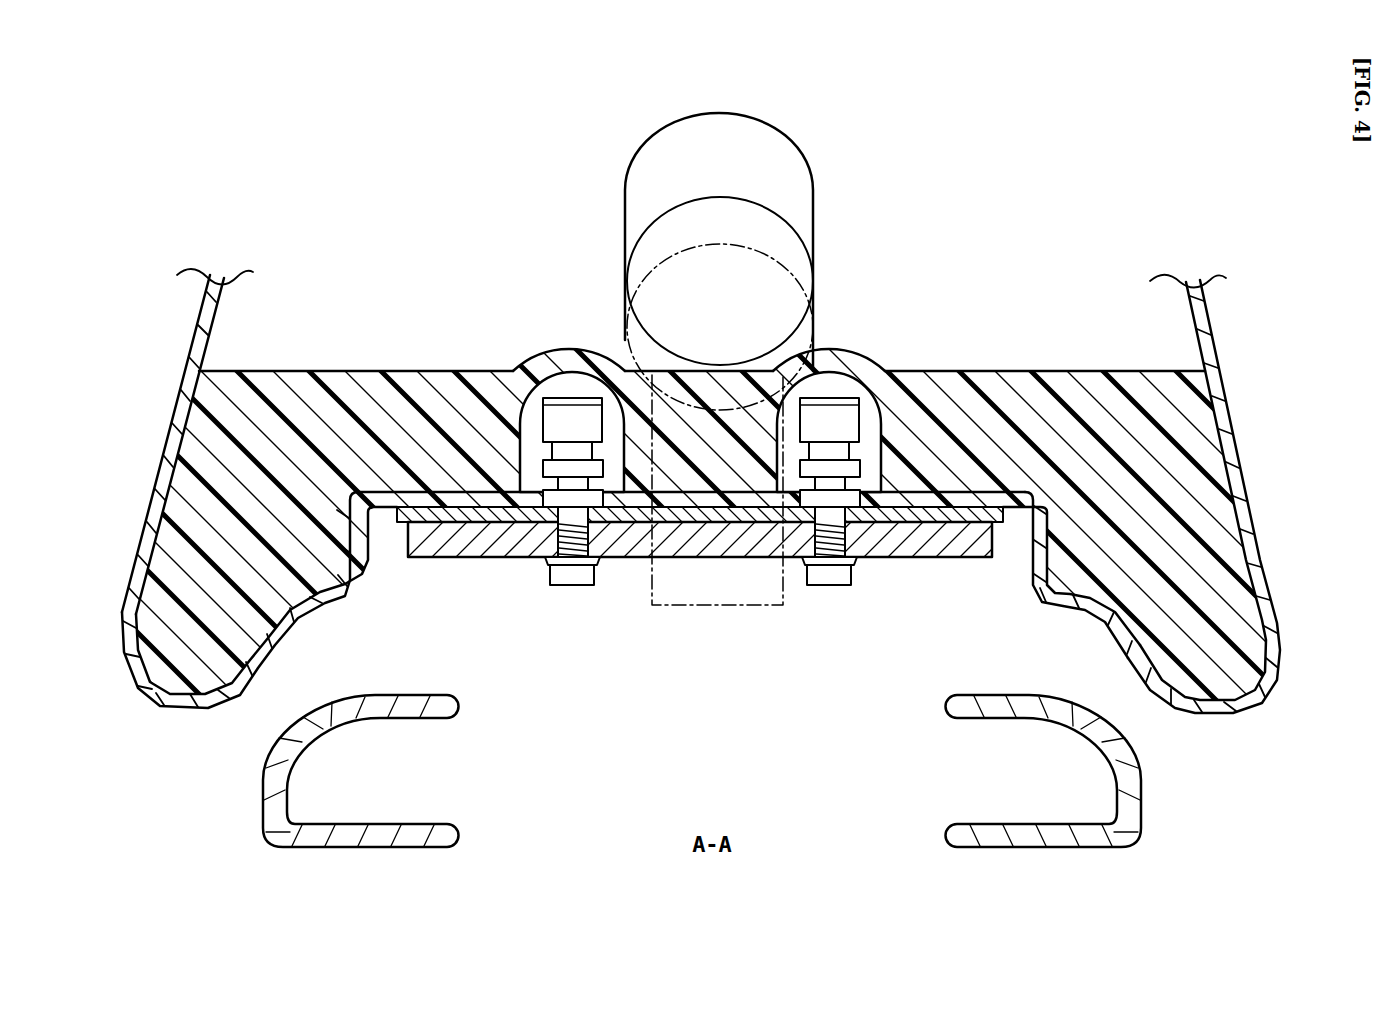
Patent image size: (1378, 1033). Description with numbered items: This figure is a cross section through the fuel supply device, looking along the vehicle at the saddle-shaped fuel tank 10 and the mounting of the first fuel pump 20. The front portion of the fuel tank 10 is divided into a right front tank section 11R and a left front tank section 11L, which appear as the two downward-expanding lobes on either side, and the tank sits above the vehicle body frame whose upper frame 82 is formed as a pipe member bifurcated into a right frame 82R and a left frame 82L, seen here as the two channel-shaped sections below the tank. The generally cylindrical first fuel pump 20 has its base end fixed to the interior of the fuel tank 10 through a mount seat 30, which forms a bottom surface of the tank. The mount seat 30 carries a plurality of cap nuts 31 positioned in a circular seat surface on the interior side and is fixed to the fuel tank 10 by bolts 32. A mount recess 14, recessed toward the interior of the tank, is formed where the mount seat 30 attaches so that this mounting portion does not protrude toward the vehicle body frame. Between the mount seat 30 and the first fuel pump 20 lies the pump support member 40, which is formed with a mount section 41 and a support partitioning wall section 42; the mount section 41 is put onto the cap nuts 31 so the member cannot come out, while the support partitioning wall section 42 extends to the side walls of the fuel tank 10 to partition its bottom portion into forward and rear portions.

The fuel tank 10 is at (702, 491).
The left front tank section 11L is at (160, 548).
The right front tank section 11R is at (1236, 536).
The mount recess 14 is at (1034, 567).
The first fuel pump 20 is at (810, 170).
The mount seat 30 is at (433, 558).
The cap nuts 31 is at (562, 412).
The bolts 32 is at (568, 586).
The pump support member 40 is at (689, 501).
The mount section 41 is at (573, 349).
The support partitioning wall section 42 is at (275, 598).
The upper frame 82 is at (703, 771).
The right frame 82R is at (262, 782).
The left frame 82L is at (1143, 783).